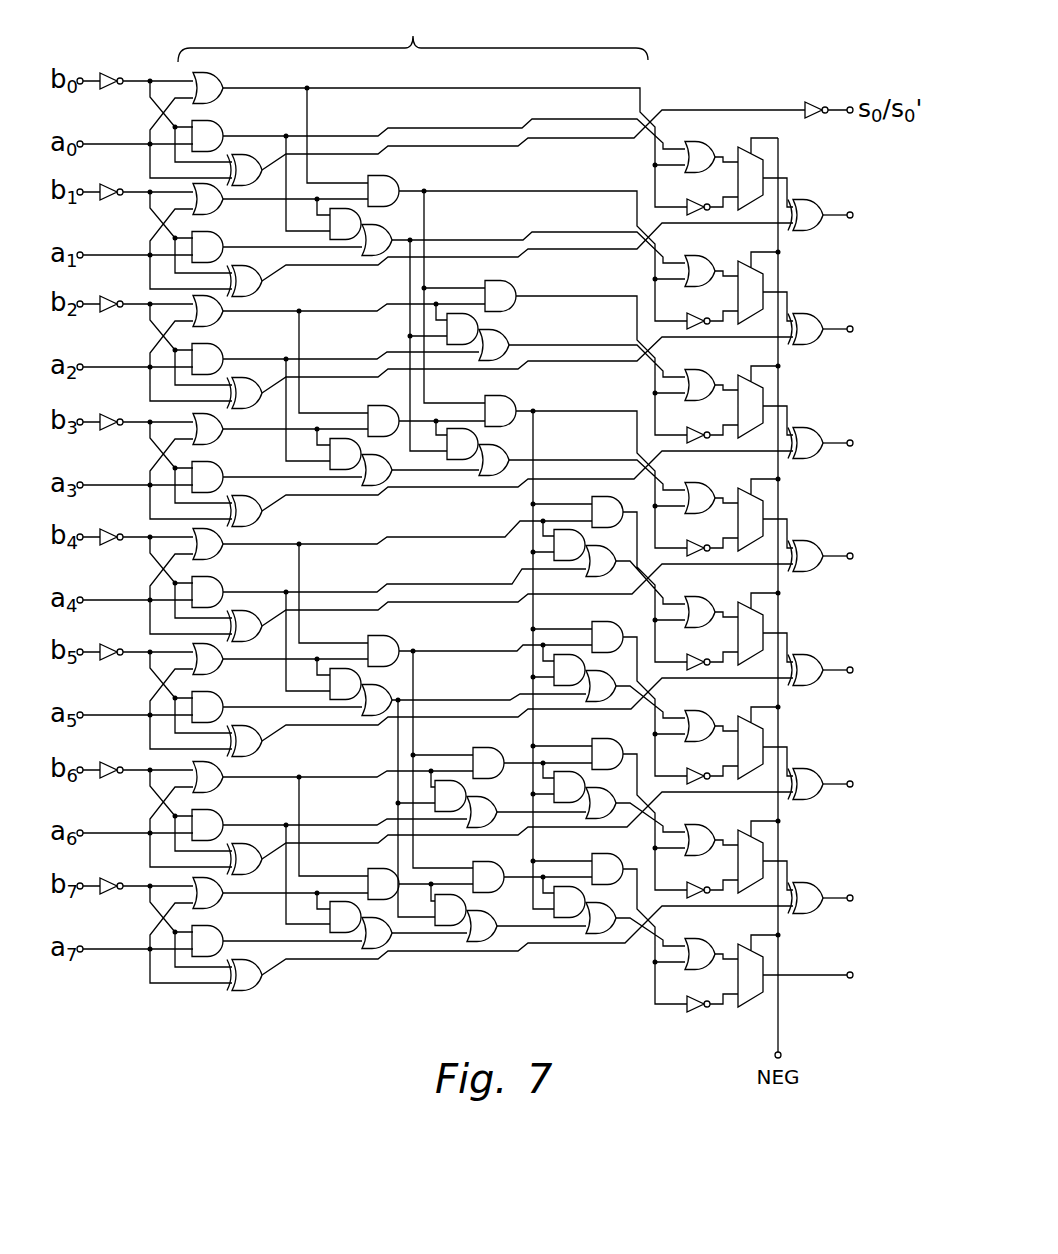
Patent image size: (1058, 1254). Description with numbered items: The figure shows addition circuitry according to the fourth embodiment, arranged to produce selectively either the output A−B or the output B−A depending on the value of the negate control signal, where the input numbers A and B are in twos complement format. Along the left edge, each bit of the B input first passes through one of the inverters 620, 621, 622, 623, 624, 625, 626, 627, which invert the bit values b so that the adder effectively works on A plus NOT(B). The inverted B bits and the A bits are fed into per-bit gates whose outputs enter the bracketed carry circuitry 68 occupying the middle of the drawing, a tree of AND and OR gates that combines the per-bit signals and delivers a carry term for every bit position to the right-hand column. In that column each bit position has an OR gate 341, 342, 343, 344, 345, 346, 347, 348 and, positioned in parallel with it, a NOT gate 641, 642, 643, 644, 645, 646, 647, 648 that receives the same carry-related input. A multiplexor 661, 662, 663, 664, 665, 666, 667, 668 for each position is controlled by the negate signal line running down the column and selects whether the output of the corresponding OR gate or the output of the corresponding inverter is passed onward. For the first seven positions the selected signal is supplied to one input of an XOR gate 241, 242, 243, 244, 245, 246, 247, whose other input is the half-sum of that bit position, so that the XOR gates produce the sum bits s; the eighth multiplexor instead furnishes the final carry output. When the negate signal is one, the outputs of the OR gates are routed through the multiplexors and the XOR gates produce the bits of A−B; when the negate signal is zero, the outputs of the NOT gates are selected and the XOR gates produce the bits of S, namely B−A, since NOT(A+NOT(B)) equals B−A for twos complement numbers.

The inverter 620 is at (114, 54).
The inverter 621 is at (114, 165).
The inverter 622 is at (114, 277).
The inverter 623 is at (114, 395).
The inverter 624 is at (114, 510).
The inverter 625 is at (114, 625).
The inverter 626 is at (114, 743).
The inverter 627 is at (114, 859).
The carry circuitry 68 is at (413, 35).
The OR gate 341 is at (699, 121).
The OR gate 342 is at (699, 235).
The OR gate 343 is at (699, 349).
The OR gate 344 is at (699, 462).
The OR gate 345 is at (699, 576).
The OR gate 346 is at (699, 690).
The OR gate 347 is at (699, 804).
The OR gate 348 is at (699, 918).
The inverter 641 is at (686, 183).
The inverter 642 is at (686, 297).
The inverter 643 is at (686, 411).
The inverter 644 is at (686, 524).
The inverter 645 is at (686, 638).
The inverter 646 is at (686, 752).
The inverter 647 is at (686, 866).
The inverter 648 is at (686, 980).
The multiplexor 661 is at (764, 166).
The multiplexor 662 is at (764, 280).
The multiplexor 663 is at (764, 394).
The multiplexor 664 is at (764, 507).
The multiplexor 665 is at (764, 621).
The multiplexor 666 is at (764, 735).
The multiplexor 667 is at (764, 849).
The multiplexor 668 is at (764, 963).
The XOR gate 241 is at (807, 197).
The XOR gate 242 is at (807, 311).
The XOR gate 243 is at (807, 425).
The XOR gate 244 is at (807, 538).
The XOR gate 245 is at (807, 652).
The XOR gate 246 is at (807, 766).
The XOR gate 247 is at (807, 880).